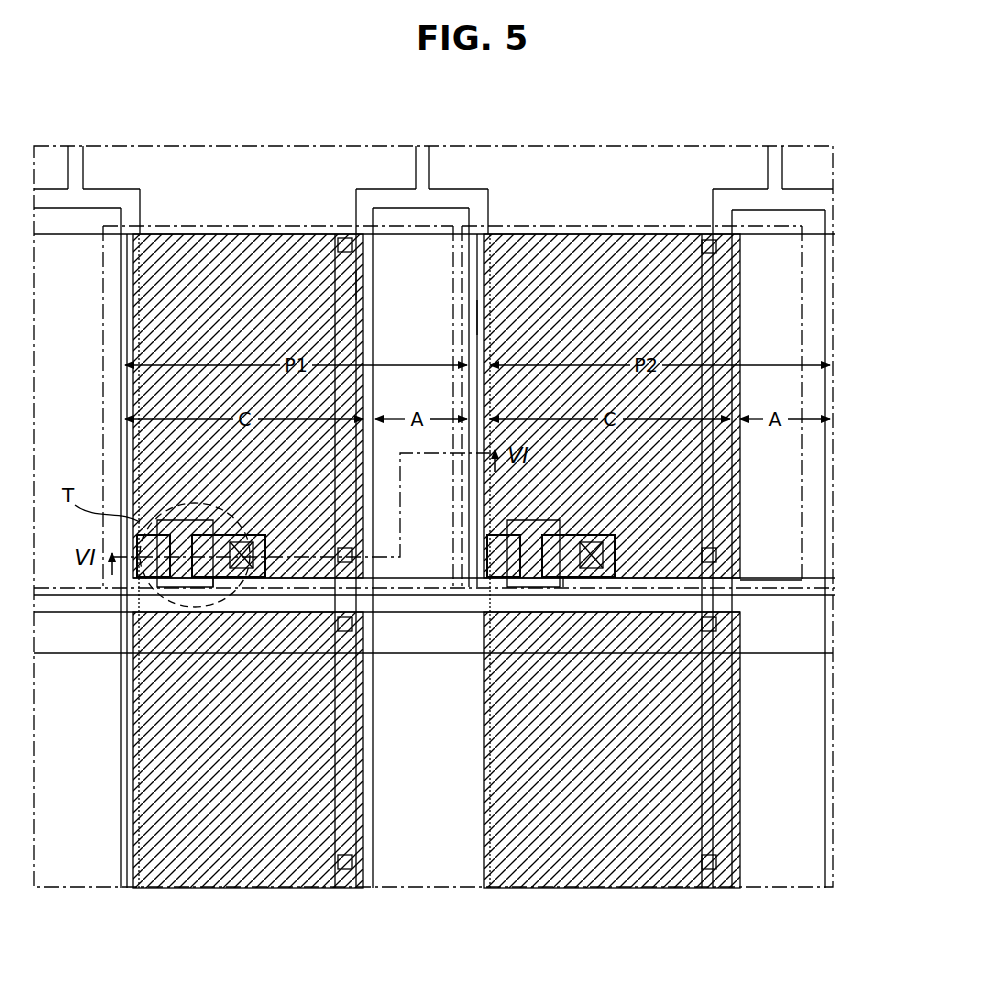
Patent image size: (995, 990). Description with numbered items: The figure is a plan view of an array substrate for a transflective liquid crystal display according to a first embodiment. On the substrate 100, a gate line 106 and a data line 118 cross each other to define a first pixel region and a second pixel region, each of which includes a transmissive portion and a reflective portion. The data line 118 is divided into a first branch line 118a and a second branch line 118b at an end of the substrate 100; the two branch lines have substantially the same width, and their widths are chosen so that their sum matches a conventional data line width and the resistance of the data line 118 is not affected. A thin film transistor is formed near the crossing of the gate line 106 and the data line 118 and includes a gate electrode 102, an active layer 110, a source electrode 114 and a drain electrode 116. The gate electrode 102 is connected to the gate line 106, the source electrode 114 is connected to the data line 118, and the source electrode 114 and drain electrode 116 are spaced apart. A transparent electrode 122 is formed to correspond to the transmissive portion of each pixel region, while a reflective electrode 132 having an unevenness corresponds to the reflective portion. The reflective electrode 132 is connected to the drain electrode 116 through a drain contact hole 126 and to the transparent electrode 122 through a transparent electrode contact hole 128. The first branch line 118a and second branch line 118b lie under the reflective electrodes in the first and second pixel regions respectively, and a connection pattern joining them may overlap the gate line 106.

The substrate 100 is at (833, 752).
The gate electrode 102 is at (192, 520).
The gate line 106 is at (773, 656).
The active layer 110 is at (184, 590).
The source electrode 114 is at (155, 535).
The drain electrode 116 is at (247, 535).
The data line 118 is at (105, 189).
The first branch line 118a is at (364, 283).
The second branch line 118b is at (478, 320).
The transparent electrode 122 is at (401, 232).
The drain contact hole 126 is at (241, 595).
The transparent electrode contact hole 128 is at (344, 238).
The reflective electrode 132 is at (220, 233).